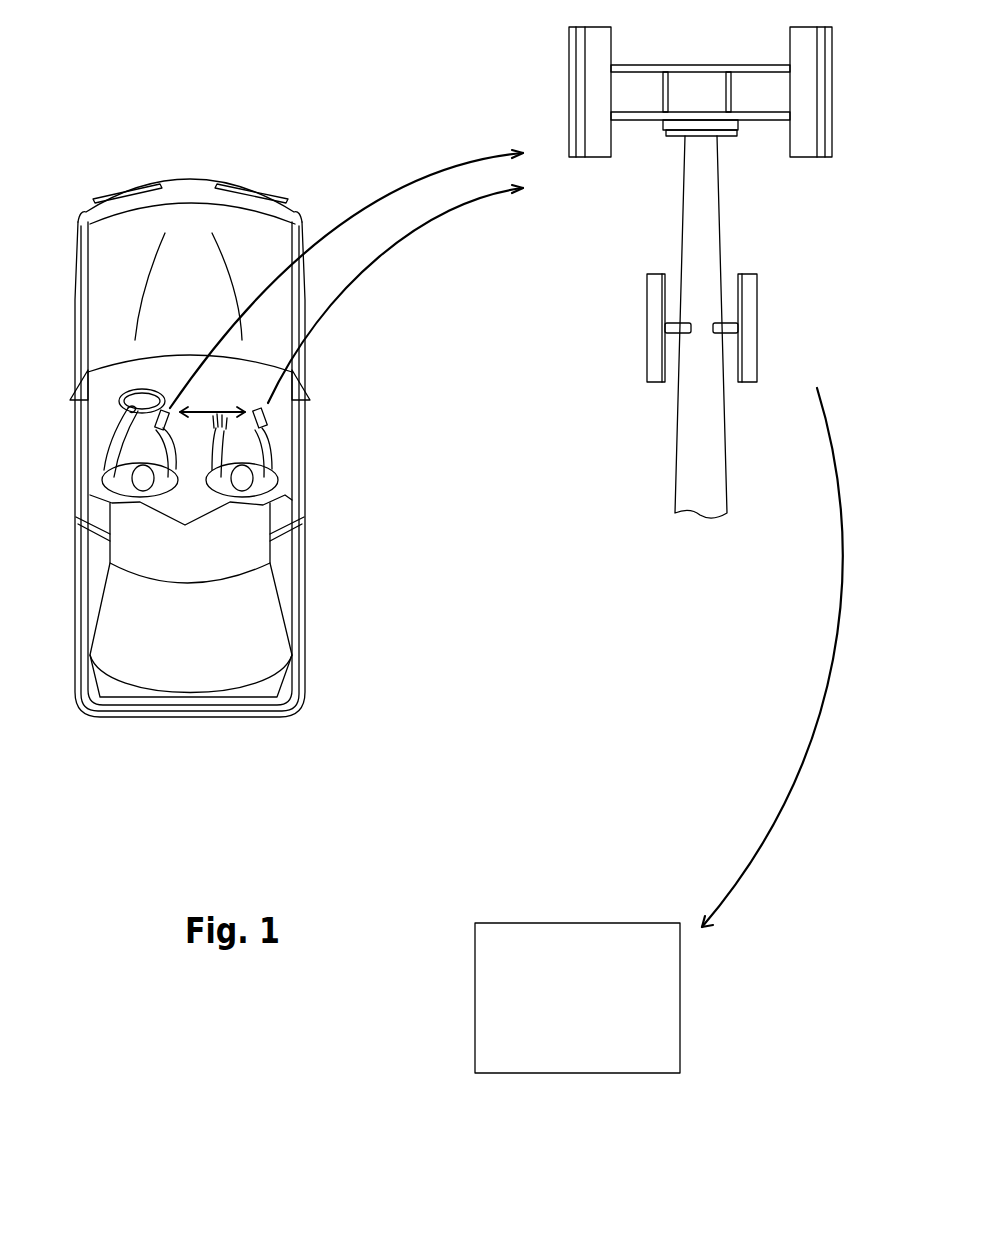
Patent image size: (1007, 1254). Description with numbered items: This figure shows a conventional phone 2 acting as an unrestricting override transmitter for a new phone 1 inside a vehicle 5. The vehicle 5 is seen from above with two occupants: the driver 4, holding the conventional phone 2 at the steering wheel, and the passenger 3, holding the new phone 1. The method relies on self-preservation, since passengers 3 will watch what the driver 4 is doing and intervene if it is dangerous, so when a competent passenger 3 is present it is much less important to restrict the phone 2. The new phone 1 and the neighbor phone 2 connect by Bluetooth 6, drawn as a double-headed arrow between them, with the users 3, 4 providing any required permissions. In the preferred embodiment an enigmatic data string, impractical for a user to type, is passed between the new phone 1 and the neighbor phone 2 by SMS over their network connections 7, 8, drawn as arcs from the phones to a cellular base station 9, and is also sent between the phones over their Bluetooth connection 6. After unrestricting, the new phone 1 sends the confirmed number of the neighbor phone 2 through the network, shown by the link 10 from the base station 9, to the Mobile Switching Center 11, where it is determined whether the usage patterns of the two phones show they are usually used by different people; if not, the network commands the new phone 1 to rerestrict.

The new phone 1 is at (268, 421).
The conventional phone 2 is at (158, 416).
The passenger 3 is at (277, 460).
The driver 4 is at (110, 481).
The vehicle 5 is at (337, 607).
The Bluetooth connection 6 is at (214, 408).
The network connection 7 is at (420, 172).
The network connection 8 is at (418, 225).
The cellular base station 9 is at (672, 470).
The connection from base station to mobile switching center 10 is at (787, 805).
The Mobile Switching Center 11 is at (475, 1030).